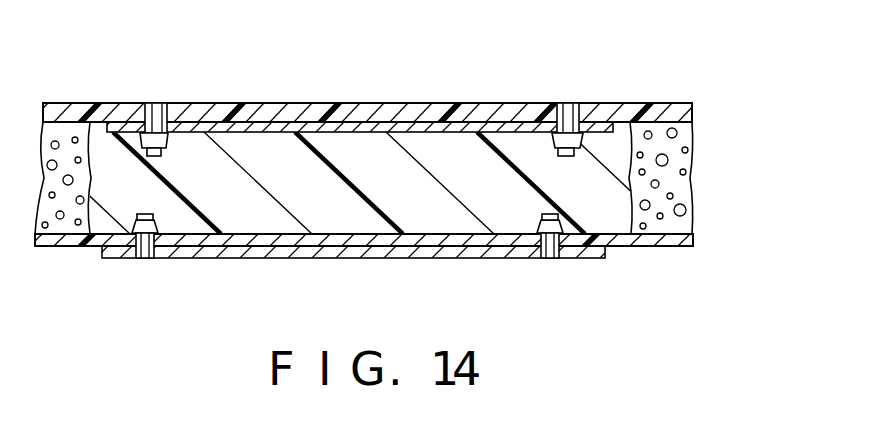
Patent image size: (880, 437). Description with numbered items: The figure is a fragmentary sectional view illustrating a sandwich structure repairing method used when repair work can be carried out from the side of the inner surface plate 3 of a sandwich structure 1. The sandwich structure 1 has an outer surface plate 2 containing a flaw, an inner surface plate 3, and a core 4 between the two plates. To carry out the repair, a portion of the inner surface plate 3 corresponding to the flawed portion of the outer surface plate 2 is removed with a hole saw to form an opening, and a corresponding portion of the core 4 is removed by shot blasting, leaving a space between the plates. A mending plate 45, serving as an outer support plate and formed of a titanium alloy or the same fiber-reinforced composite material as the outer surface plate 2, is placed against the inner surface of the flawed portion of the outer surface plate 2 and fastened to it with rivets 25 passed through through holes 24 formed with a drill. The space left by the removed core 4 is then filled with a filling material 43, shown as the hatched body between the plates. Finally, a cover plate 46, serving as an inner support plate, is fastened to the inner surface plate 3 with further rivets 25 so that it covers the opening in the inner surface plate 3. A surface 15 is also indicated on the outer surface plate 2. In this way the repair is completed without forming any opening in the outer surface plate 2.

The sandwich structure 1 is at (75, 90).
The outer surface plate 2 is at (663, 103).
The inner surface plate 3 is at (663, 246).
The core 4 is at (683, 188).
The top surface 15 is at (378, 103).
The through holes 24 is at (121, 103).
The rivets 25 is at (158, 103).
The filling material 43 is at (427, 212).
The mending plate 45 is at (478, 103).
The cover plate 46 is at (300, 258).